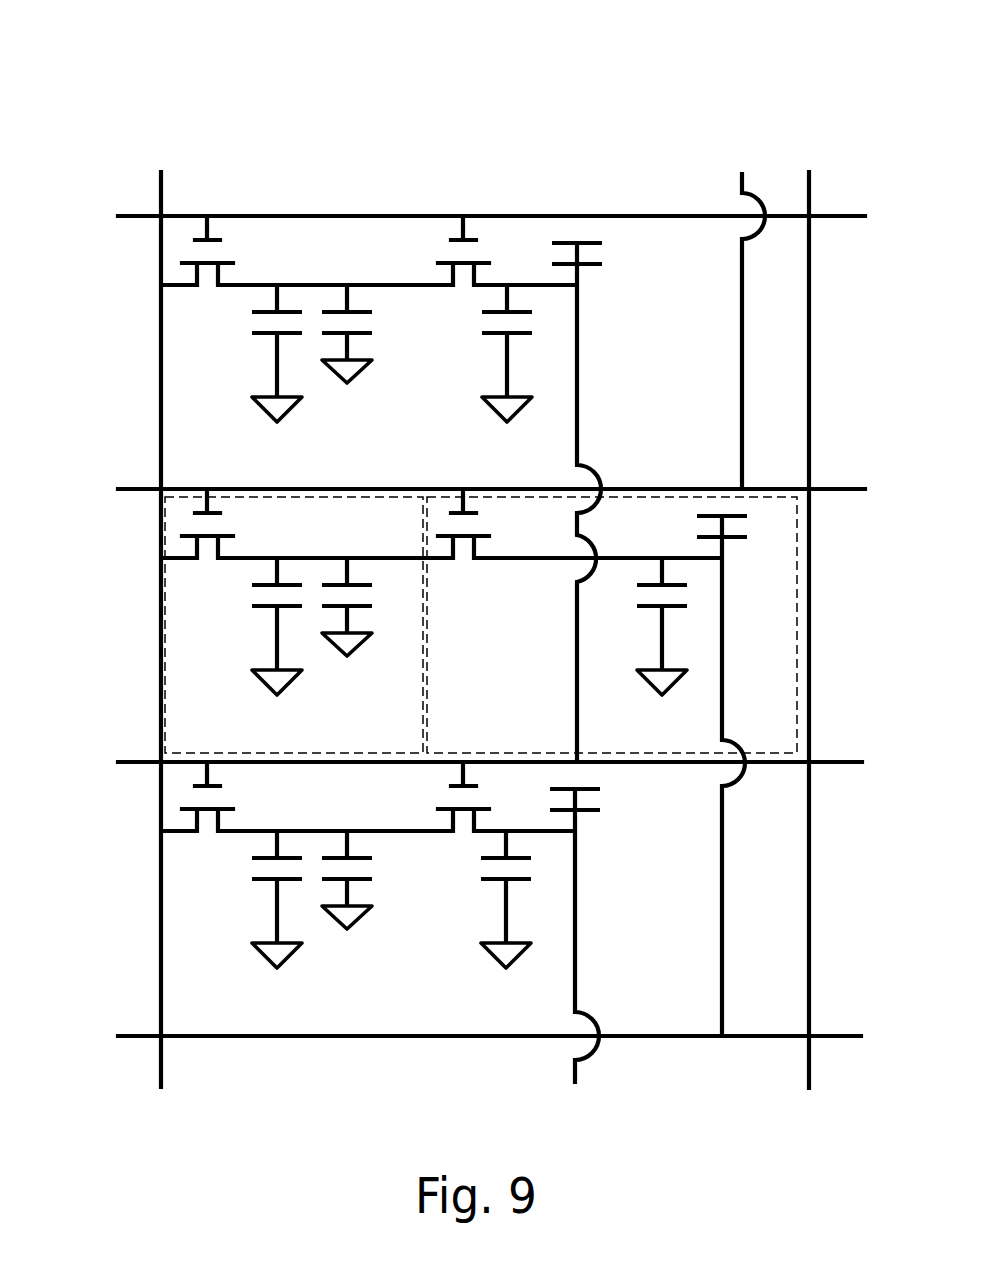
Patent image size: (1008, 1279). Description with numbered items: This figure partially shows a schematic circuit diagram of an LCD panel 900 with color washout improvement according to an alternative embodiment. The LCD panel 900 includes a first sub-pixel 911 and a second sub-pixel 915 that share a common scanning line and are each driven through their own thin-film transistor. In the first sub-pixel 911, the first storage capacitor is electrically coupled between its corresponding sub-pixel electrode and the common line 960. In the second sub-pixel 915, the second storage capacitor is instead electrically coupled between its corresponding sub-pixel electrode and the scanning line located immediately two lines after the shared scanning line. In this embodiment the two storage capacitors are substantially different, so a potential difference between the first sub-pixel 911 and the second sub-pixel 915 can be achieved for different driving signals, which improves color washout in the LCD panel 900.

The LCD panel 900 is at (520, 51).
The first sub-pixel 911 is at (264, 621).
The second sub-pixel 915 is at (663, 762).
The common line 960 is at (356, 635).